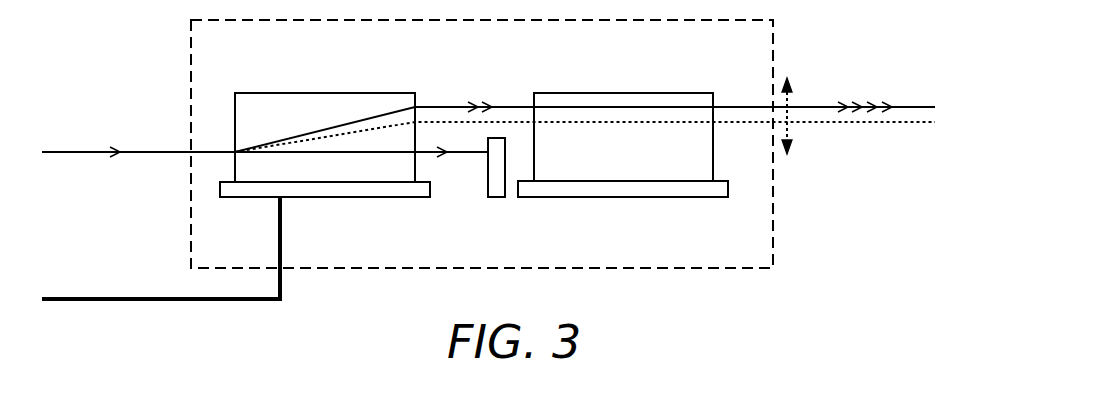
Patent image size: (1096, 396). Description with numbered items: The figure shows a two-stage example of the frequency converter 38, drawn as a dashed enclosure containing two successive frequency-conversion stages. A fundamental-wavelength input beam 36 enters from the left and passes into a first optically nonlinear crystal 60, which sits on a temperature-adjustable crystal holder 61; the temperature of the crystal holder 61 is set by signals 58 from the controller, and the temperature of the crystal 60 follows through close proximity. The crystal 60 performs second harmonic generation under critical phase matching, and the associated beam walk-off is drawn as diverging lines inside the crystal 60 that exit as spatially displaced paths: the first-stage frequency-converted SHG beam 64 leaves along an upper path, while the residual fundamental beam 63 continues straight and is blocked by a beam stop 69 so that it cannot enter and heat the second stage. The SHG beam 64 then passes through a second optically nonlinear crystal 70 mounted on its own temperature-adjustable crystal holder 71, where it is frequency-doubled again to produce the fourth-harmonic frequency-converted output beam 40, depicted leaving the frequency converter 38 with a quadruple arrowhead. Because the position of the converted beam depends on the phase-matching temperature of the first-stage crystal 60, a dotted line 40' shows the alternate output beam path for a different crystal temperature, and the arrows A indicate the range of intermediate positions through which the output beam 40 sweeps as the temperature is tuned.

The frequency converter 38 is at (186, 74).
The fundamental-wavelength input beam 36 is at (72, 153).
The optically nonlinear crystal 60 is at (265, 93).
The temperature-adjustable crystal holder 61 is at (325, 197).
The signals 58 is at (85, 299).
The first-stage frequency-converted SHG beam 64 is at (444, 107).
The frequency-converted output beam 40 is at (876, 75).
The alternate frequency-converted output beam path 40' is at (585, 158).
The residual fundamental beam 63 is at (470, 154).
The beam stop 69 is at (491, 197).
The optically nonlinear crystal 70 is at (580, 93).
The temperature-adjustable crystal holder 71 is at (637, 197).
The arrows A is at (792, 146).